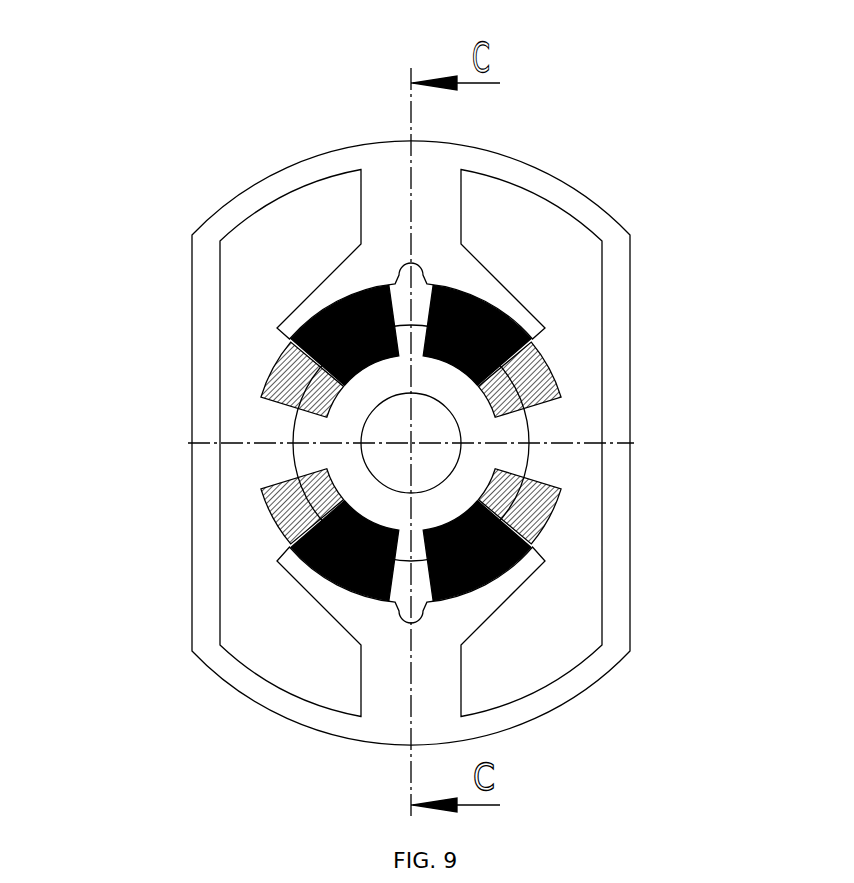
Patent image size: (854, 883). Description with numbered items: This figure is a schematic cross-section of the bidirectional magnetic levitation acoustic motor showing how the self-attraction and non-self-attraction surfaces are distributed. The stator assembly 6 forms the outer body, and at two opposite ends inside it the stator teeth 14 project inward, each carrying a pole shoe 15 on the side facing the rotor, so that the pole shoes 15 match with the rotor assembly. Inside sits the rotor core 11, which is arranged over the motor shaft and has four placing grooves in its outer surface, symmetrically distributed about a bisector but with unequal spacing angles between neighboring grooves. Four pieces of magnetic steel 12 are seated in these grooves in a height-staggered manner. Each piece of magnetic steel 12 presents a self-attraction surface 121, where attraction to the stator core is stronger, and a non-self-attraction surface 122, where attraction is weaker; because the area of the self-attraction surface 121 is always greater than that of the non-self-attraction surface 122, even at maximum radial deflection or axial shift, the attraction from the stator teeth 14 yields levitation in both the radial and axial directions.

The stator assembly 6 is at (463, 386).
The rotor core 11 is at (536, 418).
The magnetic steel 12 is at (205, 529).
The self-attraction surface 121 is at (185, 398).
The non-self-attraction surface 122 is at (213, 309).
The stator teeth 14 is at (478, 496).
The pole shoe 15 is at (621, 606).